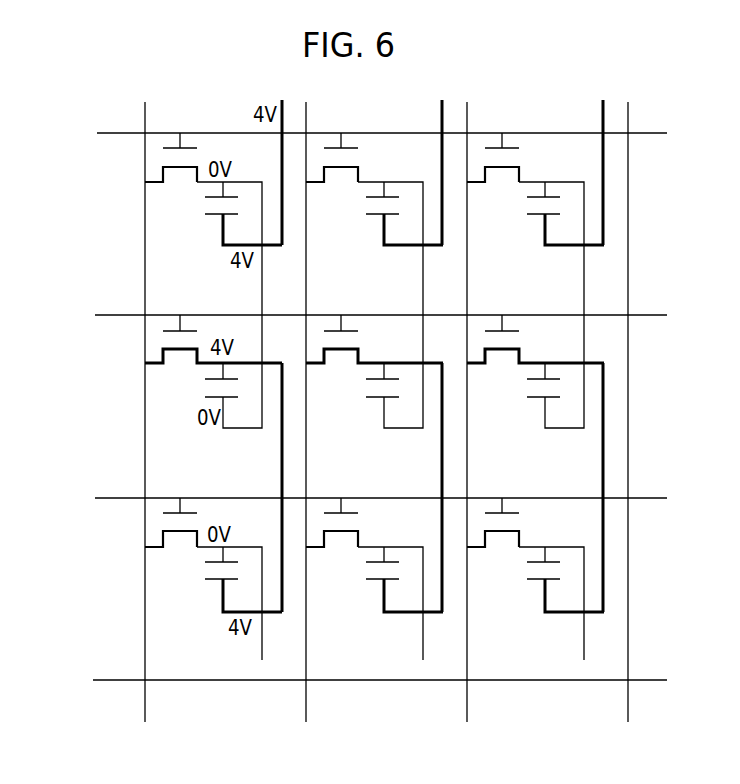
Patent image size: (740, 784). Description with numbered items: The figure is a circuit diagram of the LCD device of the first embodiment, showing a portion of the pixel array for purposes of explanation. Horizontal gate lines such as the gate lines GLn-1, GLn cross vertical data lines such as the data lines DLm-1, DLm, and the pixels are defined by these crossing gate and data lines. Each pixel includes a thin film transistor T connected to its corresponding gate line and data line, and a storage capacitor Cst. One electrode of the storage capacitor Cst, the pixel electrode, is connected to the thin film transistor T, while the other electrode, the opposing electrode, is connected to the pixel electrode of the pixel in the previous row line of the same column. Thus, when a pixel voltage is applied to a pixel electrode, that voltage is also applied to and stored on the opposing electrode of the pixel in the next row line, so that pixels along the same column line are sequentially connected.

The thin film transistor T is at (171, 348).
The storage capacitor Cst is at (230, 397).
The data line DLm-1 is at (153, 398).
The data line DLm is at (308, 398).
The gate line GLn-1 is at (348, 134).
The gate line GLn is at (358, 317).